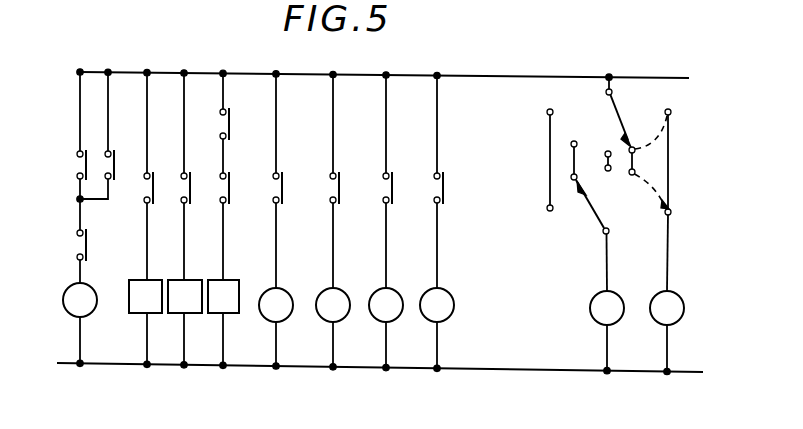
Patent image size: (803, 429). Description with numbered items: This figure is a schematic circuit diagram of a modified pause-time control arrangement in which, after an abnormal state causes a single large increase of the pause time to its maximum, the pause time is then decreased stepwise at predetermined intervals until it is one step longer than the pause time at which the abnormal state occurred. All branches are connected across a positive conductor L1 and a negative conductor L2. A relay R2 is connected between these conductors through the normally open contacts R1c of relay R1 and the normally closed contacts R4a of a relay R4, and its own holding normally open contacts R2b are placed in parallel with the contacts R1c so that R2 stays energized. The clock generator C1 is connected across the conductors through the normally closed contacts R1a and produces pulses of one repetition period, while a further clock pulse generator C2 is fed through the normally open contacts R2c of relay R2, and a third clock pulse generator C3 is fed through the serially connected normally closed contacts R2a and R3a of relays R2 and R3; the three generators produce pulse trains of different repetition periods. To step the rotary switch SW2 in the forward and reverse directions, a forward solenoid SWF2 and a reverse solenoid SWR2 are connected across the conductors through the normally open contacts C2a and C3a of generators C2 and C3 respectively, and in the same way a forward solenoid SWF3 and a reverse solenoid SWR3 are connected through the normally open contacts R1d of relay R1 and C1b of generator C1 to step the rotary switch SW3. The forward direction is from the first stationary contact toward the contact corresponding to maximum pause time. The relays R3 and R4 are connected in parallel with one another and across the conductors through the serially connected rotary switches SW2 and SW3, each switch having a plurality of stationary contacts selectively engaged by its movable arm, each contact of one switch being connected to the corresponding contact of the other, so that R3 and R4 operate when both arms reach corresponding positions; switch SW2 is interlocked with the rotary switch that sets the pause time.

The positive conductor L1 is at (521, 75).
The negative conductor L2 is at (478, 374).
The normally open contacts of relay R1 R1c is at (75, 168).
The holding normally open contacts of relay R2 R2b is at (121, 172).
The normally closed contacts of relay R4 R4a is at (77, 249).
The relay R2 is at (62, 302).
The normally closed contacts of relay R1 R1a is at (157, 187).
The clock generator C1 is at (145, 322).
The normally open contacts of relay R2 R2c is at (195, 187).
The clock pulse generator C2 is at (185, 322).
The normally closed contacts of relay R2 R2a is at (236, 124).
The normally closed contacts of relay R3 R3a is at (235, 187).
The clock pulse generator C3 is at (223, 323).
The normally open contacts of clock generator C2 C2a is at (292, 187).
The forward solenoid SWF2 is at (284, 290).
The normally open contacts of clock generator C3 C3a is at (348, 187).
The reverse solenoid SWR2 is at (341, 290).
The normally open contacts of relay R1 R1d is at (402, 187).
The forward solenoid SWF3 is at (394, 290).
The normally open contacts of clock generator C1 C1b is at (454, 188).
The reverse solenoid SWR3 is at (454, 290).
The rotary switch SW2 is at (609, 146).
The rotary switch SW3 is at (602, 187).
The relay R3 is at (591, 320).
The relay R4 is at (673, 322).